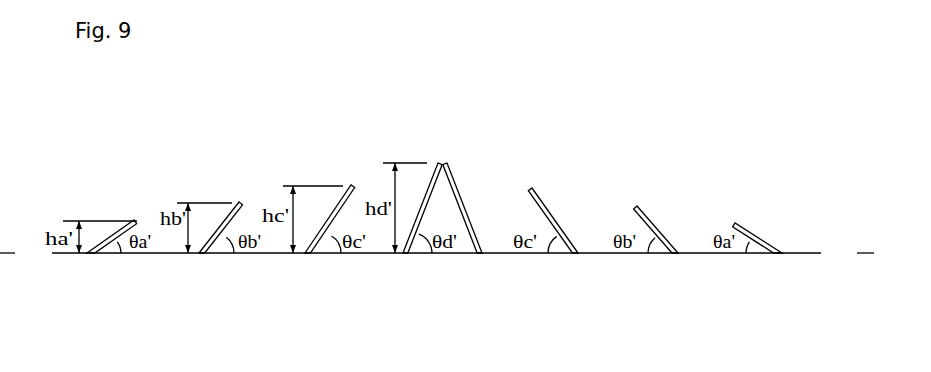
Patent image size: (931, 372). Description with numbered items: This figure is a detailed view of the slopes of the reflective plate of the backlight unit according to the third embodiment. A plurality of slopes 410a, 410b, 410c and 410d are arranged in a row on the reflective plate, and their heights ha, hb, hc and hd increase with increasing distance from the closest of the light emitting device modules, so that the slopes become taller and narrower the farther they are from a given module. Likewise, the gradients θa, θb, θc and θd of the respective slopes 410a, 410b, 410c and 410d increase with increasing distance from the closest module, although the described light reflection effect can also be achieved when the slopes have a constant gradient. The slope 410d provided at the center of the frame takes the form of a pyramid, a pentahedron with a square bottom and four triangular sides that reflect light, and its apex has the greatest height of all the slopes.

The slope 410a is at (105, 254).
The slope 410b is at (217, 254).
The slope 410c is at (327, 254).
The slope 410d is at (458, 254).